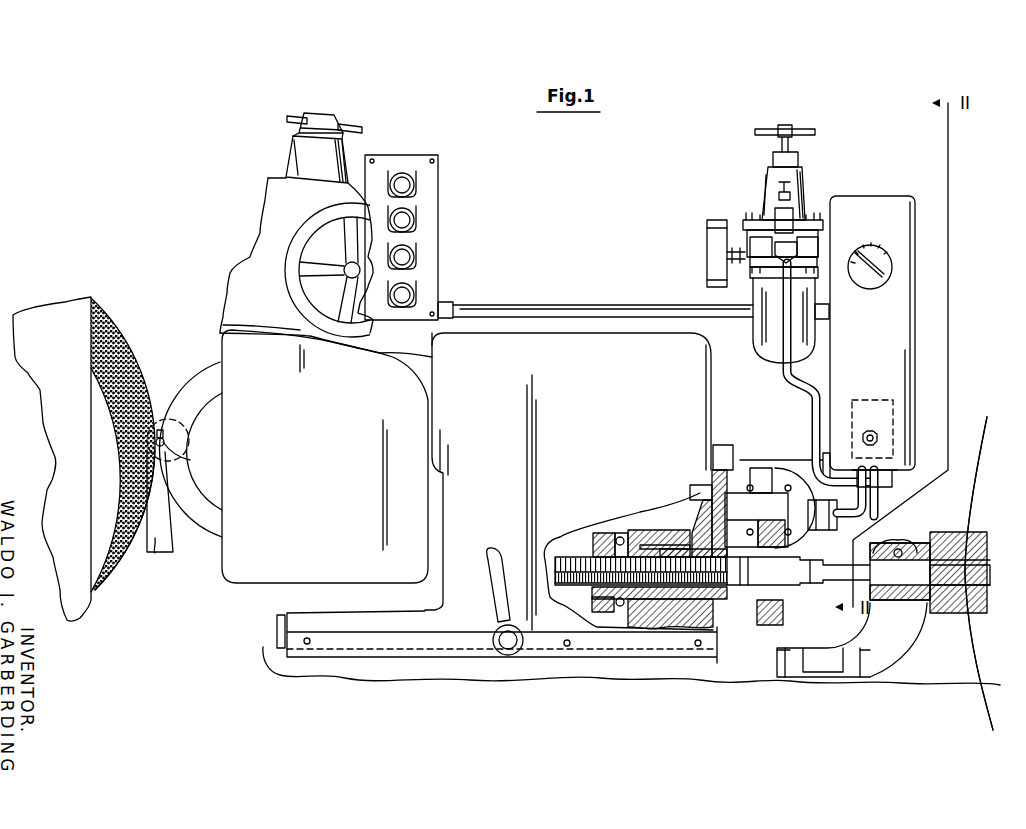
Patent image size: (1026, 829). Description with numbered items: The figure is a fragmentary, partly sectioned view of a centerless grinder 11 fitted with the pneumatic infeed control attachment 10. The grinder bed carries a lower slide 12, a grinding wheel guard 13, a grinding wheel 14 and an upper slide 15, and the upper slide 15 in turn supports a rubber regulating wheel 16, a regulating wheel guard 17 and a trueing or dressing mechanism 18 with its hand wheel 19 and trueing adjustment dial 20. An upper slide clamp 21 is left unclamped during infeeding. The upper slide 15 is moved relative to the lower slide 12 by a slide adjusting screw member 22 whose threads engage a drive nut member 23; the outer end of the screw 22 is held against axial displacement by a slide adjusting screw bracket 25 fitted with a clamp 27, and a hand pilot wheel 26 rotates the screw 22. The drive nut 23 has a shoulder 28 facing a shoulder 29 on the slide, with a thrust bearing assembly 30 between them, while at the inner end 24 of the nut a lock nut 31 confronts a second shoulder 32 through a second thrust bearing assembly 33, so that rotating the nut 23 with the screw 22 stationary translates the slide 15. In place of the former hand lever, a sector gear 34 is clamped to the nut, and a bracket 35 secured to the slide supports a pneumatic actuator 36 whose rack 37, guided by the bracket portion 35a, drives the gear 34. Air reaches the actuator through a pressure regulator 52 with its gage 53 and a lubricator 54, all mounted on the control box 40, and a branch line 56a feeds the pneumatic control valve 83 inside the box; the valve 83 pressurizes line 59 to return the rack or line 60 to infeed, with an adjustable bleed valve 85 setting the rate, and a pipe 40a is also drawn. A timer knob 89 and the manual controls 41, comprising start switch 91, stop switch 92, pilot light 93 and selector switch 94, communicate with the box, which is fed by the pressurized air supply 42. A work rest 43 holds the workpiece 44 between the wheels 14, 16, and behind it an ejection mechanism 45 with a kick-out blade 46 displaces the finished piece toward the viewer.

The infeed control attachment 10 is at (888, 302).
The centerless grinder 11 is at (194, 660).
The lower slide 12 is at (522, 668).
The grinding wheel guard 13 is at (40, 337).
The grinding wheel 14 is at (118, 392).
The upper slide 15 is at (500, 492).
The regulating wheel 16 is at (218, 392).
The regulating wheel guard 17 is at (296, 489).
The regulating wheel trueing or dressing mechanism 18 is at (280, 198).
The hand wheel 19 is at (291, 246).
The trueing adjustment dial 20 is at (328, 117).
The upper slide clamp 21 is at (498, 598).
The slide adjusting screw member 22 is at (552, 557).
The drive nut member 23 is at (675, 540).
The inner end of the drive nut 24 is at (600, 540).
The slide adjusting screw bracket 25 is at (905, 624).
The hand pilot wheel 26 is at (975, 613).
The clamp 27 is at (899, 549).
The shoulder 28 is at (705, 495).
The shoulder 29 is at (697, 487).
The thrust bearing assembly 30 is at (690, 627).
The lock nut 31 is at (618, 535).
The second shoulder 32 is at (643, 535).
The thrust bearing assembly 33 is at (616, 612).
The gear or sector gear 34 is at (778, 606).
The bracket 35 is at (738, 470).
The portion of the bracket 35a is at (770, 490).
The pneumatic actuator 36 is at (790, 480).
The rack 37 is at (773, 510).
The control box 40 is at (888, 333).
The air pipe 40a is at (806, 460).
The manual controls 41 is at (407, 160).
The pressurized air supply 42 is at (805, 183).
The work rest 43 is at (150, 543).
The workpiece 44 is at (172, 458).
The ejection mechanism 45 is at (165, 430).
The kick-out blade 46 is at (158, 430).
The pressure regulator 52 is at (773, 178).
The gage 53 is at (715, 252).
The lubricator 54 is at (775, 345).
The branch air line 56a is at (888, 477).
The line 59 is at (842, 517).
The line 60 is at (878, 504).
The pneumatic control valve 83 is at (877, 408).
The adjustable valve 85 is at (880, 437).
The knob 89 is at (888, 264).
The momentary switch 91 is at (410, 220).
The momentary switch 92 is at (410, 186).
The pilot light 93 is at (410, 260).
The rotary manual selector switch 94 is at (410, 296).